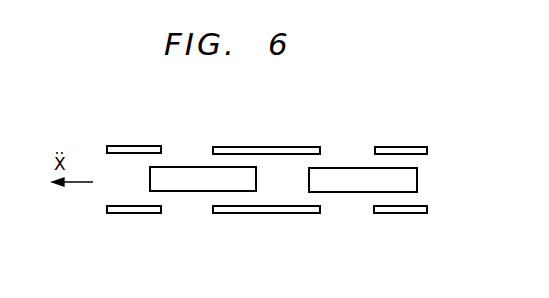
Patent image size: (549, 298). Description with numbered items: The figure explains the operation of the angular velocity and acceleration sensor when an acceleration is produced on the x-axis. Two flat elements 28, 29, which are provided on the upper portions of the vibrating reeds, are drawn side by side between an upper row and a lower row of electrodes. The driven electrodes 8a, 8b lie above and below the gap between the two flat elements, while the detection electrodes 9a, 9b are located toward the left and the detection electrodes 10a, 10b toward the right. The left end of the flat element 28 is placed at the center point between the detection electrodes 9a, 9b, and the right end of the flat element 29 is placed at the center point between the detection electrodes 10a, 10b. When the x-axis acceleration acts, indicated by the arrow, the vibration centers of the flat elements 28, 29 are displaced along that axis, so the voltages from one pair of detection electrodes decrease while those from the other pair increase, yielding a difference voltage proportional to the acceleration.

The driven electrode 8a is at (278, 147).
The driven electrode 8b is at (272, 216).
The detection electrode 9a is at (131, 146).
The detection electrode 9b is at (128, 215).
The detection electrode 10a is at (406, 147).
The detection electrode 10b is at (404, 216).
The flat element 28 is at (183, 191).
The flat element 29 is at (345, 193).